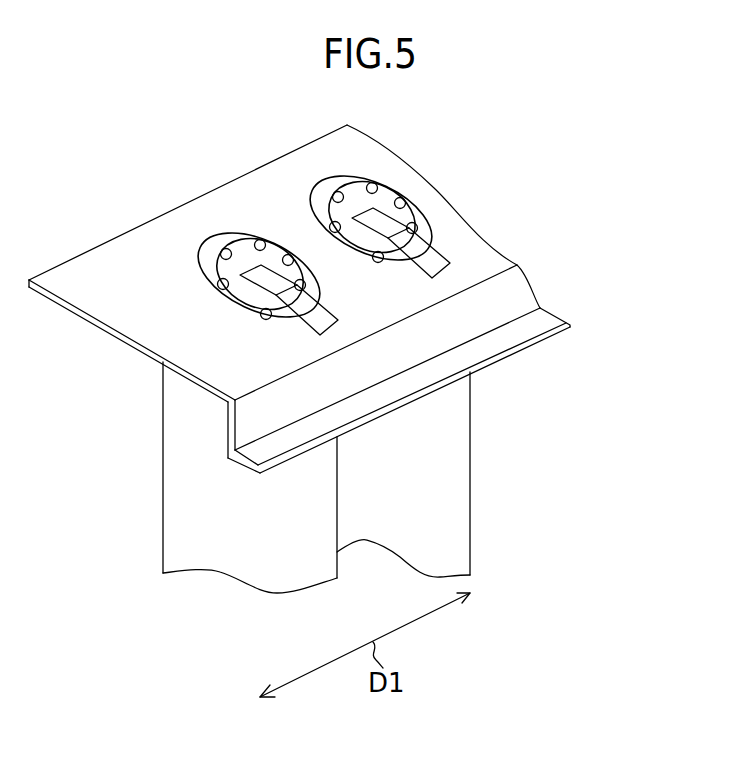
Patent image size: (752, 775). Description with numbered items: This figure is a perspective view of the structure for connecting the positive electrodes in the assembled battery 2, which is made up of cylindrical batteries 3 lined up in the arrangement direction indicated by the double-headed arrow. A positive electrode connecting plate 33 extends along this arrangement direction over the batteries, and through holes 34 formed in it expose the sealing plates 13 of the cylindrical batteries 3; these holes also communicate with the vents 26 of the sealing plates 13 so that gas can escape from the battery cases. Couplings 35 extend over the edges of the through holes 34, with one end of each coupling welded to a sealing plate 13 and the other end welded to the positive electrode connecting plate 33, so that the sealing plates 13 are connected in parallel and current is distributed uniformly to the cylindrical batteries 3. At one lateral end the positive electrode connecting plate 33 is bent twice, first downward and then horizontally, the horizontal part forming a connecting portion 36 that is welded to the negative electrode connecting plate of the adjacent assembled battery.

The assembled battery 2 is at (137, 445).
The cylindrical batteries 3 is at (198, 557).
The sealing plate 13 is at (215, 257).
The vents 26 is at (223, 252).
The positive electrode connecting plate 33 is at (250, 192).
The through hole 34 is at (203, 277).
The couplings 35 is at (430, 262).
The connecting portion 36 is at (538, 320).